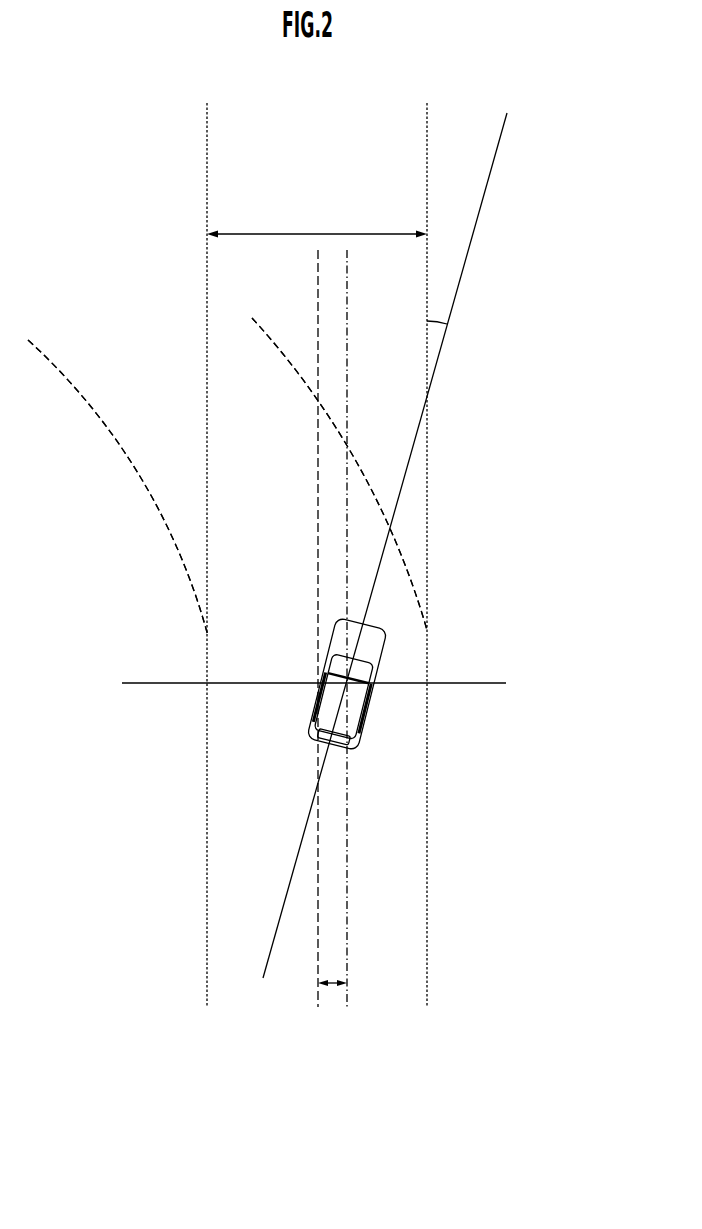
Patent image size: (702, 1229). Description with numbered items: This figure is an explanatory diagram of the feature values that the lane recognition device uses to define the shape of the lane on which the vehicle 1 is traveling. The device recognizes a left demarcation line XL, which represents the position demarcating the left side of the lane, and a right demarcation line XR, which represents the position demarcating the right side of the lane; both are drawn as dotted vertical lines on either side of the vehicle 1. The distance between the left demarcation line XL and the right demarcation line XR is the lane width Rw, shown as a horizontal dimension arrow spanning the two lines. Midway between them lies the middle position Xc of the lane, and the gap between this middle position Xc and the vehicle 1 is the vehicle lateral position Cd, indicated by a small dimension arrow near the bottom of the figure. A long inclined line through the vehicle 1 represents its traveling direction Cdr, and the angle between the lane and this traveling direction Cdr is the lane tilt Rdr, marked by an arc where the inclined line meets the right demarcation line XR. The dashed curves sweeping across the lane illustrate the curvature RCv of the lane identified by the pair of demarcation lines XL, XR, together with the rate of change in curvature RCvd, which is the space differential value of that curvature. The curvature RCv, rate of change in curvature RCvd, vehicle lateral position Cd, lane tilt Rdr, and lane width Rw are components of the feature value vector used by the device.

The vehicle 1 is at (322, 712).
The left demarcation line XL is at (201, 573).
The right demarcation line XR is at (422, 573).
The middle position of the lane Xc is at (324, 646).
The lane width Rw is at (317, 223).
The traveling direction of the vehicle Cdr is at (497, 150).
The lane tilt Rdr is at (437, 321).
The curvature RCv is at (164, 550).
The rate of change in curvature RCvd is at (164, 550).
The vehicle lateral position Cd is at (332, 983).